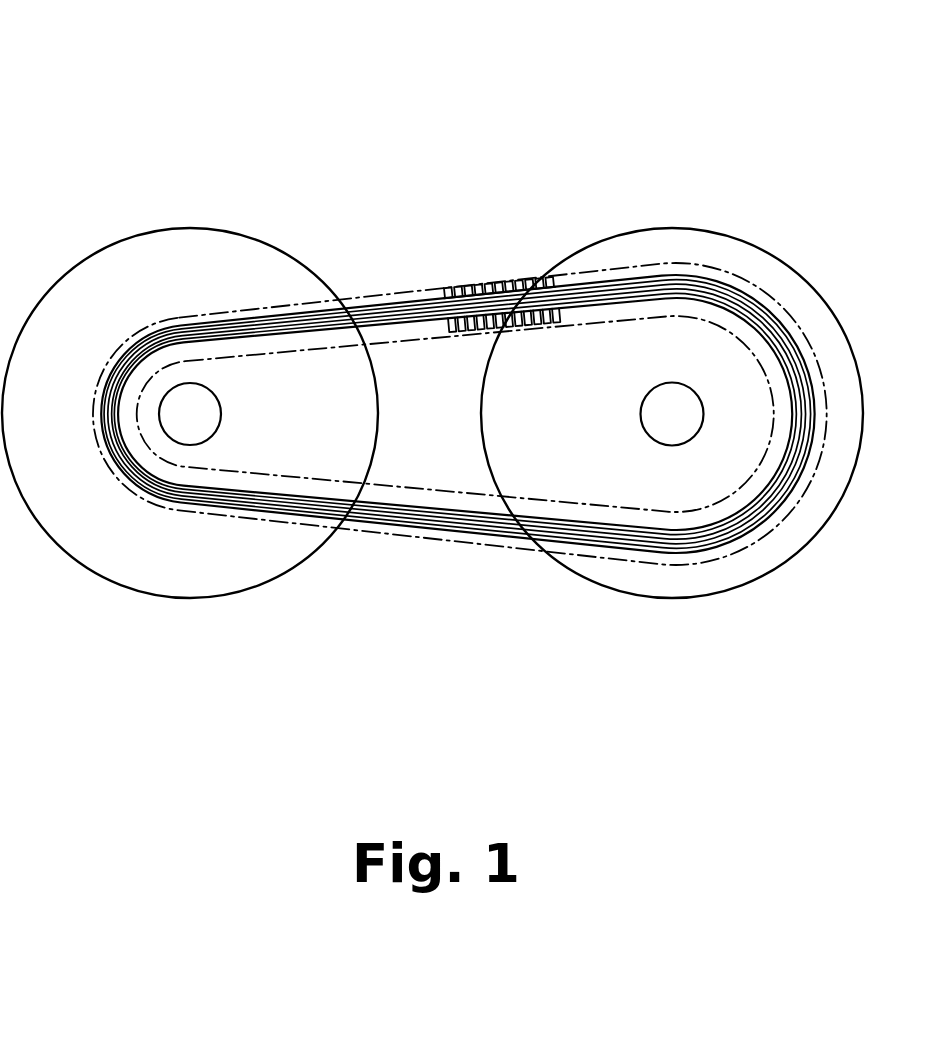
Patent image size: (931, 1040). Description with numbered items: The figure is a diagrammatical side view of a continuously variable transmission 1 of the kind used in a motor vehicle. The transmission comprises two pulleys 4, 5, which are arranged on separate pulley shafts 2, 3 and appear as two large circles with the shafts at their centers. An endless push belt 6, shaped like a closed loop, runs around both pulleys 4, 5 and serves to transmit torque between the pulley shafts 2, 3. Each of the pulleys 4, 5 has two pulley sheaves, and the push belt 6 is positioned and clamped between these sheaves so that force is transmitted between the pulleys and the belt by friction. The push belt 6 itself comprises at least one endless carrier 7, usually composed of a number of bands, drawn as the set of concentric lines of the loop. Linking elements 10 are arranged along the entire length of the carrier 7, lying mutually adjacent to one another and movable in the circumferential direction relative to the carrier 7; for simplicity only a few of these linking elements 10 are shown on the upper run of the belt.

The continuously variable transmission 1 is at (242, 133).
The pulley shaft 2 is at (183, 408).
The pulley shaft 3 is at (683, 415).
The pulley 4 is at (173, 210).
The pulley 5 is at (685, 198).
The push belt 6 is at (373, 493).
The endless carrier 7 is at (476, 519).
The linking elements 10 is at (482, 288).